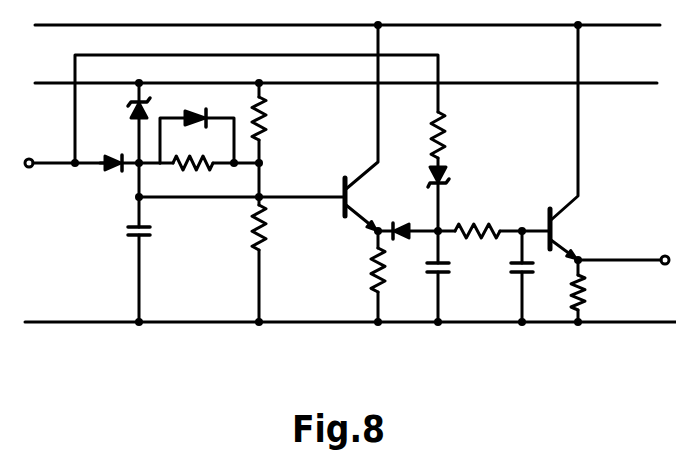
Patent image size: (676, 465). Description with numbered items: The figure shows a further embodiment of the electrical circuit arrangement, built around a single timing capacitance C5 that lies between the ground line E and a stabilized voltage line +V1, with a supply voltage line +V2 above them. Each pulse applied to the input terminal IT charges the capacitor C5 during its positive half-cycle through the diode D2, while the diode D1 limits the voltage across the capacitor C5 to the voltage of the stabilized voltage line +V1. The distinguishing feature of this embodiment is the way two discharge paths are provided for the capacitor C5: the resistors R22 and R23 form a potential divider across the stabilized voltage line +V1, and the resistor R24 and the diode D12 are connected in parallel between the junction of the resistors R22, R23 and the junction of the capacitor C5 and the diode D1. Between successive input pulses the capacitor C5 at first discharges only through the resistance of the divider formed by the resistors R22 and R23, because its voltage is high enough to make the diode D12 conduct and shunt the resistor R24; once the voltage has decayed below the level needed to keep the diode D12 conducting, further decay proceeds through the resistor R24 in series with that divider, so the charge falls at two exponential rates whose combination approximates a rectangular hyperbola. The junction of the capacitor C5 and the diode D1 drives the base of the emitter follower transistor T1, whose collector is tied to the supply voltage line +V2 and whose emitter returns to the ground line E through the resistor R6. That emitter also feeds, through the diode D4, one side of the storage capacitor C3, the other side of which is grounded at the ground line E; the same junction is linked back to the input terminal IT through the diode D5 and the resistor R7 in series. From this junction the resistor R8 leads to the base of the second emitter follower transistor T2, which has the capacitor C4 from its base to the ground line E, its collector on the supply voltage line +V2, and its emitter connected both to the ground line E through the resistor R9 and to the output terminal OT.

The supply voltage line V2 is at (347, 13).
The stabilized voltage line V1 is at (347, 71).
The ground line E is at (630, 322).
The input terminal IT is at (62, 150).
The output terminal OT is at (625, 245).
The diode D1 is at (130, 104).
The diode D2 is at (111, 158).
The diode D12 is at (192, 113).
The resistor R24 is at (210, 156).
The resistor R22 is at (268, 130).
The resistor R23 is at (283, 240).
The timing capacitance C5 is at (151, 232).
The emitter follower transistor T1 is at (360, 193).
The resistor R6 is at (370, 266).
The diode D4 is at (404, 228).
The resistor R7 is at (452, 135).
The diode D5 is at (442, 172).
The storage capacitor C3 is at (424, 284).
The resistor R8 is at (474, 226).
The capacitor C4 is at (512, 268).
The second emitter follower transistor T2 is at (553, 233).
The resistor R9 is at (588, 305).